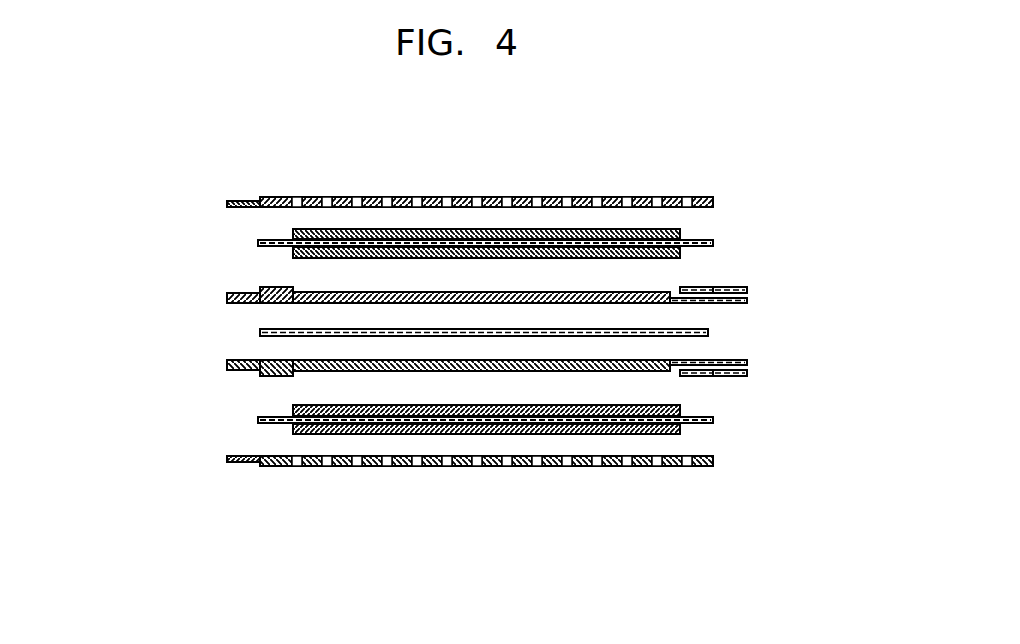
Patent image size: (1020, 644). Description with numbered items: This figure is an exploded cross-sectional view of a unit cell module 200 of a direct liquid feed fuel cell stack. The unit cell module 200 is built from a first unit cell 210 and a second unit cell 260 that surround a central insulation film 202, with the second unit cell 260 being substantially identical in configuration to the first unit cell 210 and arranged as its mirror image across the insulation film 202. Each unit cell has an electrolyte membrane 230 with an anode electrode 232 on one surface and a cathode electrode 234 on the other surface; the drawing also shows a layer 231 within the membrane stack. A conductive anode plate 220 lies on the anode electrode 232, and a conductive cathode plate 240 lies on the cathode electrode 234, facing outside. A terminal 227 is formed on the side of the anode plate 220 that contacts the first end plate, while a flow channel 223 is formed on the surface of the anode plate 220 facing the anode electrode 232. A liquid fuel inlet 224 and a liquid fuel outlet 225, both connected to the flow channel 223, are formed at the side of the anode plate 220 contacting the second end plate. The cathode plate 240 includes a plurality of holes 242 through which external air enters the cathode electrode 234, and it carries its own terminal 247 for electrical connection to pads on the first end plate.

The unit cell module 200 is at (694, 138).
The insulation film 202 is at (713, 332).
The first unit cell 210 is at (98, 155).
The anode plate 220 is at (265, 304).
The flow channel 223 is at (622, 291).
The liquid fuel inlet 224 is at (747, 290).
The liquid fuel outlet 225 is at (792, 322).
The terminal 227 is at (227, 299).
The electrolyte membrane 230 is at (174, 205).
The negative electrode current collector 231 is at (258, 243).
The anode electrode 232 is at (293, 252).
The cathode electrode 234 is at (293, 232).
The cathode plate 240 is at (262, 200).
The holes 242 is at (326, 197).
The terminal 247 is at (240, 201).
The second unit cell 260 is at (98, 362).